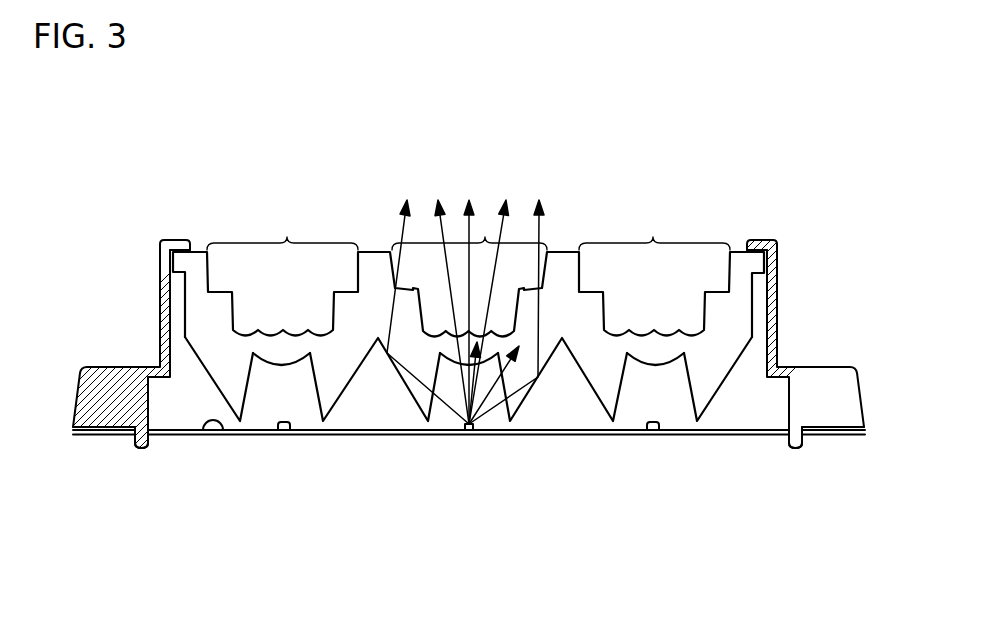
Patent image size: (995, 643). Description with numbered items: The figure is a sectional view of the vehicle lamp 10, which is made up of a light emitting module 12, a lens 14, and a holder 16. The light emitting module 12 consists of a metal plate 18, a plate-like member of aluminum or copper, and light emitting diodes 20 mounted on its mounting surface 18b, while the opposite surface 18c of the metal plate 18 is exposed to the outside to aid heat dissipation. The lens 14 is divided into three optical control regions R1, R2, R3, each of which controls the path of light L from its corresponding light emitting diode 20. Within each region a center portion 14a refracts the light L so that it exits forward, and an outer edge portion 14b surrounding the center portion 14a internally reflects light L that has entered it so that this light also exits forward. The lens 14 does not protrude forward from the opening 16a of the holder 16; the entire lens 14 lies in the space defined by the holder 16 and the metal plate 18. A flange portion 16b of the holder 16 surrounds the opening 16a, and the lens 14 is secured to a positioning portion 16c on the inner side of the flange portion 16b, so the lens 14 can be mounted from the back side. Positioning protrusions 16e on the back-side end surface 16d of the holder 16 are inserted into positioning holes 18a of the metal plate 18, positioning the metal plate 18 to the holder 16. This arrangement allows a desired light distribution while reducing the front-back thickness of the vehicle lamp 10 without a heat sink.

The vehicle lamp 10 is at (486, 622).
The light emitting module 12 is at (847, 442).
The lens 14 is at (740, 357).
The center portion 14a is at (262, 345).
The outer edge portion 14b is at (218, 342).
The holder 16 is at (778, 310).
The opening 16a is at (585, 230).
The flange portion 16b is at (757, 248).
The positioning portion 16c is at (758, 263).
The back-side end surface 16d is at (97, 437).
The positioning protrusion 16e is at (142, 447).
The metal plate 18 is at (723, 437).
The positioning hole 18a is at (132, 440).
The mounting surface 18b is at (205, 437).
The surface 18c is at (262, 437).
The light emitting diode 20 is at (292, 427).
The light L is at (469, 383).
The optical control region R1 is at (653, 237).
The optical control region R2 is at (485, 237).
The optical control region R3 is at (287, 237).